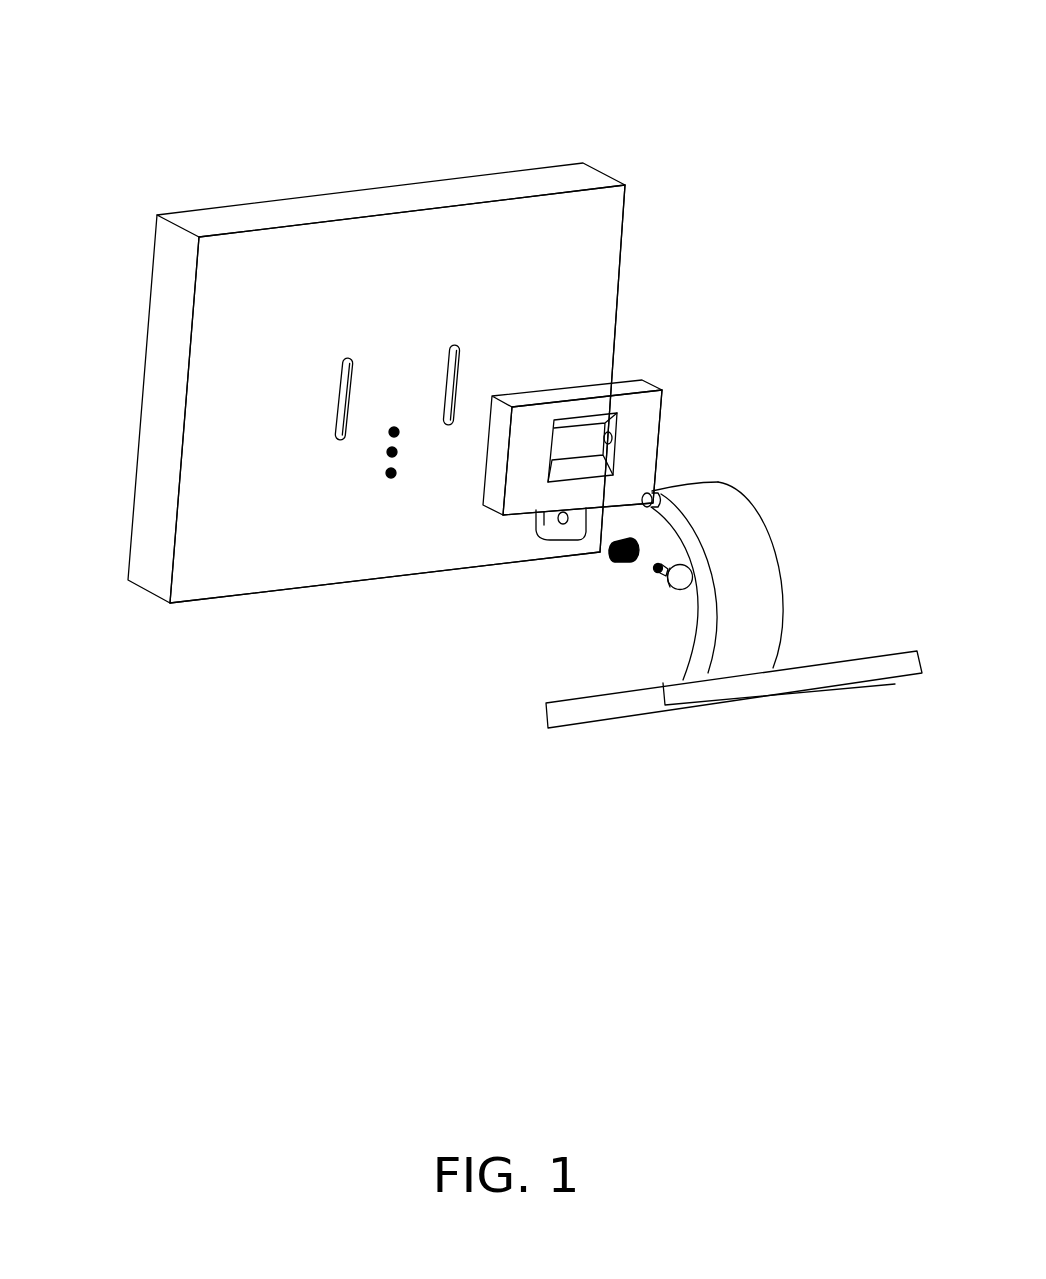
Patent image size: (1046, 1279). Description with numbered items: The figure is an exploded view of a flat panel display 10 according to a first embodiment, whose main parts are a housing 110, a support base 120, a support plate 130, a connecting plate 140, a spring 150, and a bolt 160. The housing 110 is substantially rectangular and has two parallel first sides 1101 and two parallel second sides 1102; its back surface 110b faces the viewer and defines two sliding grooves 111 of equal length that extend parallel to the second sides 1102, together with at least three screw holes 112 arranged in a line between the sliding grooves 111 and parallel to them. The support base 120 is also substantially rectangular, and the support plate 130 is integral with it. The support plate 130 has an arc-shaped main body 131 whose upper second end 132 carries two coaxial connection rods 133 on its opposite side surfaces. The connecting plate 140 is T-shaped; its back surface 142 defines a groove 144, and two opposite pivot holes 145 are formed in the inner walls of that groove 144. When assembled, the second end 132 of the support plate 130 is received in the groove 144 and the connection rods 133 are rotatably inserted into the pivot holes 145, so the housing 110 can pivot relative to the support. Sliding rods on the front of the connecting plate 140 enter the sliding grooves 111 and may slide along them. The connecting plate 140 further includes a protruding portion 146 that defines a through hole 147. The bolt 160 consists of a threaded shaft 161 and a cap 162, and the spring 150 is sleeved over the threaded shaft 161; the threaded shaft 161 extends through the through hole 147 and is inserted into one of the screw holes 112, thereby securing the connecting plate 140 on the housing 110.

The flat panel display 10 is at (478, 34).
The housing 110 is at (438, 192).
The back surface 110b is at (582, 208).
The first sides 1101 is at (290, 227).
The second sides 1102 is at (193, 315).
The sliding grooves 111 is at (457, 352).
The screw holes 112 is at (394, 435).
The support base 120 is at (853, 667).
The support plate 130 is at (760, 563).
The arc-shaped main body 131 is at (753, 572).
The second end 132 is at (714, 491).
The connection rods 133 is at (652, 493).
The connecting plate 140 is at (640, 447).
The back surface 142 is at (623, 400).
The groove 144 is at (568, 438).
The pivot holes 145 is at (613, 437).
The protruding portion 146 is at (535, 520).
The through hole 147 is at (563, 520).
The spring 150 is at (618, 557).
The bolt 160 is at (576, 593).
The threaded shaft 161 is at (657, 576).
The cap 162 is at (678, 590).